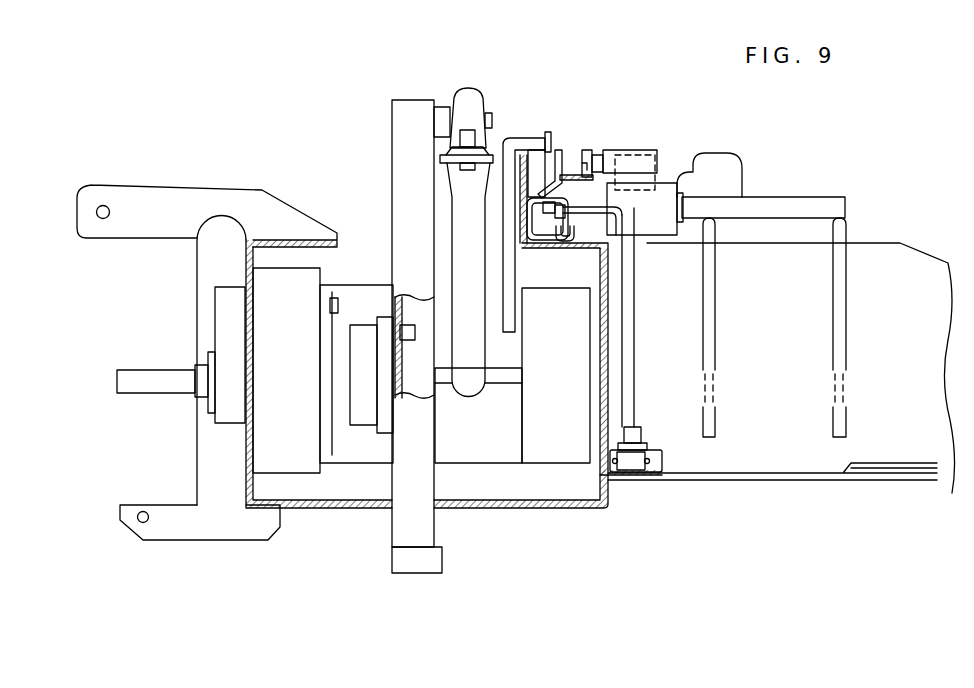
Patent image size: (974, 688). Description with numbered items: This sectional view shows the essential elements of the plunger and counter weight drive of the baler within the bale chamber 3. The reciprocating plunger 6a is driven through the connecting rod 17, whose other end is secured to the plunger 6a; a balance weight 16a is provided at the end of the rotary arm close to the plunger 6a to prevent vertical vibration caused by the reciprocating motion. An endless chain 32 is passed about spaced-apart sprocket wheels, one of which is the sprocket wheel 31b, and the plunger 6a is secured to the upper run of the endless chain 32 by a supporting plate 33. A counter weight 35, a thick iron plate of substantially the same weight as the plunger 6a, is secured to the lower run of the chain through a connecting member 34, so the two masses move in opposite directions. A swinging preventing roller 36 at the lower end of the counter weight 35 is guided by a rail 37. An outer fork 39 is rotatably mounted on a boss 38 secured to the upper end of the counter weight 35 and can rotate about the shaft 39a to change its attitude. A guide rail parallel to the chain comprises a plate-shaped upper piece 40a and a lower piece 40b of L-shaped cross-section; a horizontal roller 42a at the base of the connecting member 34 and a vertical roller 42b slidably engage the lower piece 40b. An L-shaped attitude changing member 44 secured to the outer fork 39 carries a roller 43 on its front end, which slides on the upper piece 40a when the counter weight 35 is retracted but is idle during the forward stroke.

The bale chamber 3 is at (596, 510).
The plunger 6a is at (557, 453).
The balance weight 16a is at (432, 565).
The connecting rod 17 is at (465, 387).
The sprocket wheel 31b is at (558, 166).
The endless chain 32 is at (556, 150).
The supporting plate 33 is at (518, 138).
The connecting member 34 is at (585, 210).
The counter weight 35 is at (628, 395).
The swinging preventing roller 36 is at (645, 477).
The rail 37 is at (663, 462).
The boss 38 is at (665, 192).
The outer fork 39 is at (840, 270).
The shaft 39a is at (810, 205).
The upper piece 40a is at (572, 177).
The lower piece 40b is at (570, 228).
The horizontal roller 42a is at (565, 233).
The vertical roller 42b is at (543, 240).
The roller 43 is at (588, 151).
The attitude changing member 44 is at (717, 170).